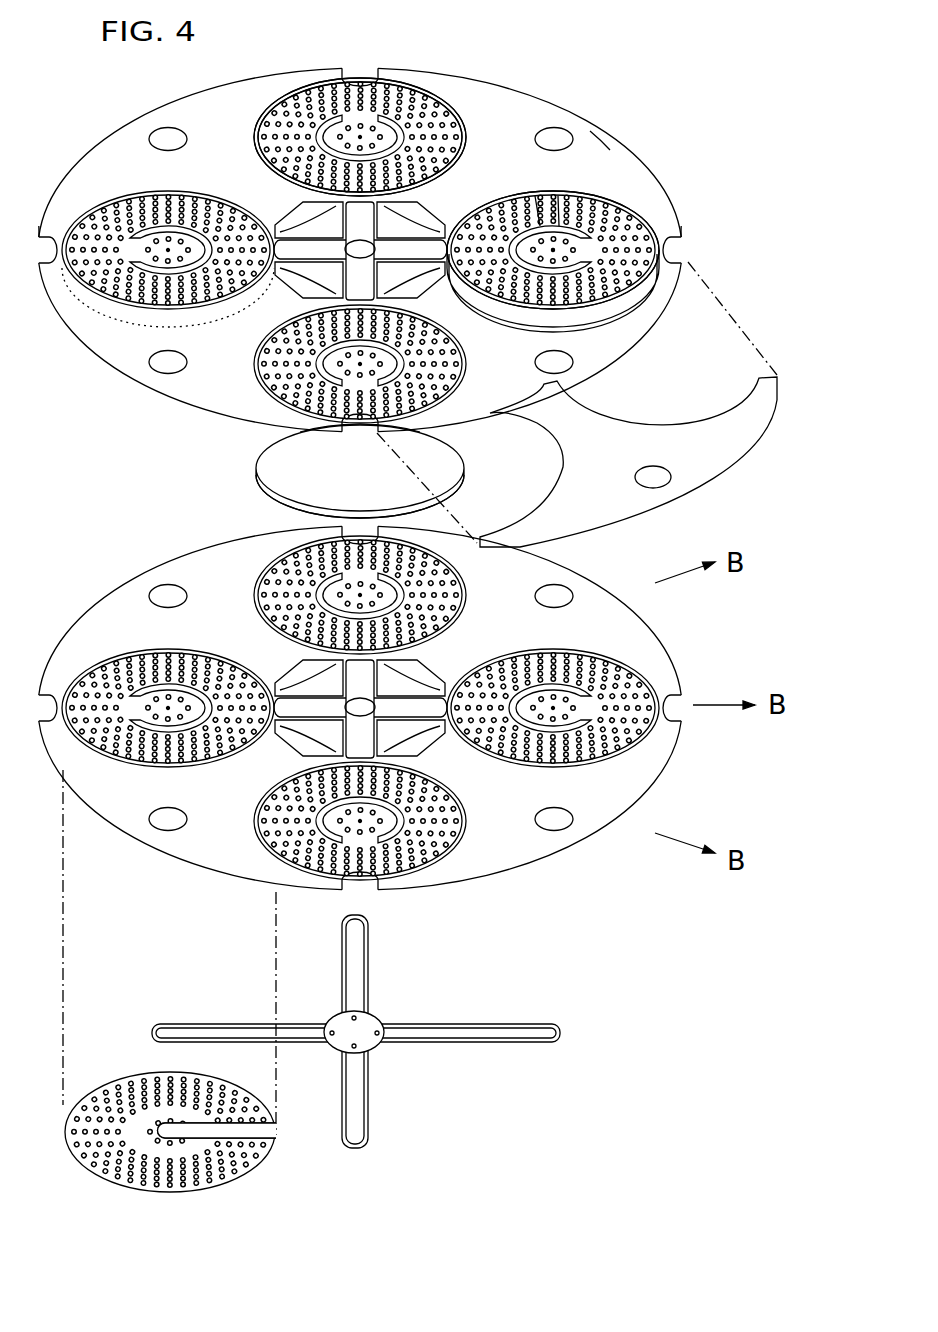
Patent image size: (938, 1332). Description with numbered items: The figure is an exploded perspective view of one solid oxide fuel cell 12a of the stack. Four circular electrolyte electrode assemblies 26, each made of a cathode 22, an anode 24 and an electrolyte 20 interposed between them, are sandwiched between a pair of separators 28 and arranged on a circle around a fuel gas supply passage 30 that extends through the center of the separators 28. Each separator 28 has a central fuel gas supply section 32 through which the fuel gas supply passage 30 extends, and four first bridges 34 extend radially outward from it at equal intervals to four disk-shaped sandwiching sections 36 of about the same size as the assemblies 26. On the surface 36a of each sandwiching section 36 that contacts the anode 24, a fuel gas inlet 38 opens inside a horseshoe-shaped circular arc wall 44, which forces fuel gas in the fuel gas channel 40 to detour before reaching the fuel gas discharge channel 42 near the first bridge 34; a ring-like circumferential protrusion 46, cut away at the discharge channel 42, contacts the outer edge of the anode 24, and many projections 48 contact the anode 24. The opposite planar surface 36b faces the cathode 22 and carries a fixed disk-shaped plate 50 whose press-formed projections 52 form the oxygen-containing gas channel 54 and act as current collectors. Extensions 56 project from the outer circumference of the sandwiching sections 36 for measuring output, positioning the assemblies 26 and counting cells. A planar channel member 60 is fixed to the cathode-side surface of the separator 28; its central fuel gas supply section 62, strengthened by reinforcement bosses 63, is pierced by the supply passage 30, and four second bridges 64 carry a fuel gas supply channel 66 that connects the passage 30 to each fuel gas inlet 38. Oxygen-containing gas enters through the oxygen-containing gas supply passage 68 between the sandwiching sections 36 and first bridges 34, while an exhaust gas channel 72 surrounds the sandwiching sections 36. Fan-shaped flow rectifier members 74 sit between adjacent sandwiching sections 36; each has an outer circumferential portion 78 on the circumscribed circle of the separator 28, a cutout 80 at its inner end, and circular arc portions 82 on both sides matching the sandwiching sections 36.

The solid oxide fuel cell 12a is at (668, 54).
The electrolyte 20 is at (258, 466).
The cathode 22 is at (265, 443).
The anode 24 is at (270, 493).
The electrolyte electrode assembly 26 is at (460, 458).
The separator 28 is at (663, 162).
The fuel gas supply passage 30 is at (345, 262).
The fuel gas supply section 32 is at (387, 260).
The first bridge 34 is at (282, 227).
The sandwiching section 36 is at (443, 72).
The surface 36a is at (285, 93).
The surface 36b is at (262, 143).
The fuel gas inlet 38 is at (554, 246).
The fuel gas channel 40 is at (610, 208).
The fuel gas discharge channel 42 is at (452, 260).
The circular arc wall 44 is at (535, 197).
The circumferential protrusion 46 is at (648, 216).
The projection 48 is at (140, 196).
The plate 50 is at (135, 1063).
The projection 52 is at (462, 377).
The oxygen-containing gas channel 54 is at (650, 305).
The extension 56 is at (350, 70).
The channel member 60 is at (356, 1031).
The fuel gas supply section 62 is at (375, 1047).
The reinforcement boss 63 is at (352, 1013).
The second bridge 64 is at (407, 1023).
The fuel gas supply channel 66 is at (482, 1027).
The oxygen-containing gas supply passage 68 is at (318, 292).
The exhaust gas channel 72 is at (31, 248).
The flow rectifier member 74 is at (555, 98).
The outer circumferential portion 78 is at (604, 128).
The cutout 80 is at (423, 203).
The circular arc portion 82 is at (586, 197).